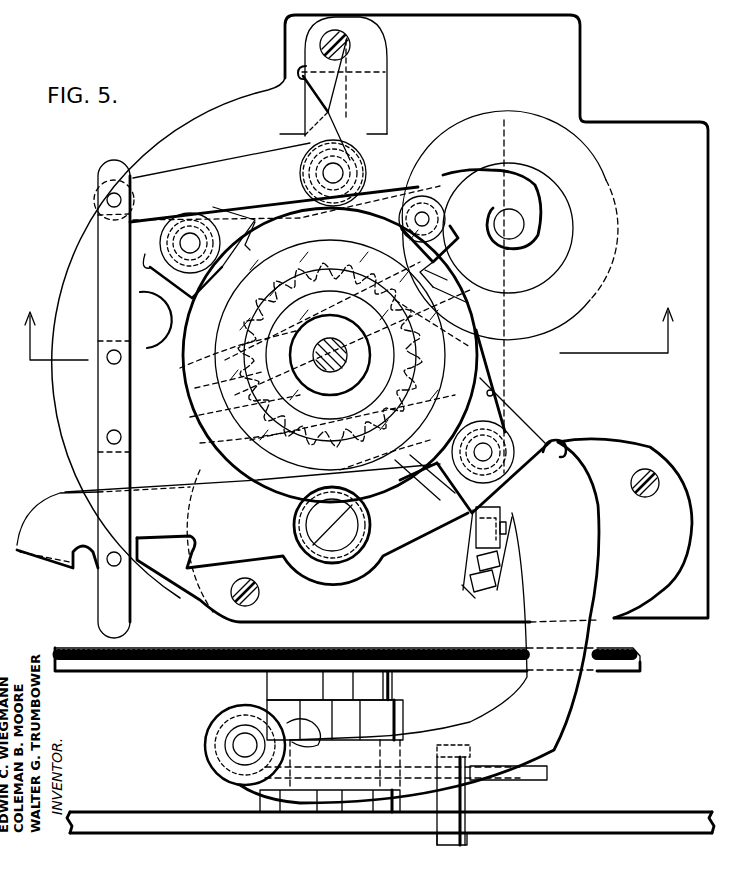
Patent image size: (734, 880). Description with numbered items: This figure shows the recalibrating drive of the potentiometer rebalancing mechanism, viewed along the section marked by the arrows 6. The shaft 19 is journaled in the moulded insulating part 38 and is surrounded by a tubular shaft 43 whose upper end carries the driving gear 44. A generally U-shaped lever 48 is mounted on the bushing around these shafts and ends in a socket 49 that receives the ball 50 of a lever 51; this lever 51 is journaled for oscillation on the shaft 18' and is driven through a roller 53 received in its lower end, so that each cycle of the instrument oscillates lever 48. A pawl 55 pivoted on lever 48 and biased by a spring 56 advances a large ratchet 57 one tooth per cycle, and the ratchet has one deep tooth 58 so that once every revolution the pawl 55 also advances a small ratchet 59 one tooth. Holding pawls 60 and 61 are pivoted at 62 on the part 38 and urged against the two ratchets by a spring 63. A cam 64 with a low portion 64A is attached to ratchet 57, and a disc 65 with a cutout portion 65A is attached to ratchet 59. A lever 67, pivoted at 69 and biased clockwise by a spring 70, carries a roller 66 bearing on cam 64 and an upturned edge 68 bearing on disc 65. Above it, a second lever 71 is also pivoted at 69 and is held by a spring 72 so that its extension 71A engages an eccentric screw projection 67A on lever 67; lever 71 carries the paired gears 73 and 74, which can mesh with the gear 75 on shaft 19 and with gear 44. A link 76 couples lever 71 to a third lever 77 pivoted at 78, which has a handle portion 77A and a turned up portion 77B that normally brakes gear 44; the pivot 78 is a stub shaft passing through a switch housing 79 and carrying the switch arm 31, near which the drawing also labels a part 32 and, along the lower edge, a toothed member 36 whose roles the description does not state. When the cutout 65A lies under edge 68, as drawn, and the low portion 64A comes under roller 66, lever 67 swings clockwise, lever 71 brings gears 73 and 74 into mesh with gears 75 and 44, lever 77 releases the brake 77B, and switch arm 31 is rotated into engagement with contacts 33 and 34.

The section line 6 is at (349, 348).
The shaft 18' is at (390, 752).
The shaft 19 is at (330, 359).
The switch arm 31 is at (484, 547).
The pin 32 is at (508, 532).
The contact 33 is at (484, 561).
The contact 34 is at (477, 581).
The rack 36 is at (90, 668).
The part 38 is at (80, 247).
The tubular shaft 43 is at (343, 339).
The driving gear 44 is at (202, 416).
The lever 48 is at (592, 558).
The socket 49 is at (222, 718).
The ball 50 is at (233, 742).
The lever 51 is at (537, 773).
The roller 53 is at (470, 785).
The pawl 55 is at (489, 387).
The spring 56 is at (540, 440).
The large ratchet 57 is at (206, 443).
The deep tooth 58 is at (462, 300).
The small ratchet 59 is at (194, 467).
The holding pawl 60 is at (260, 225).
The holding pawl 61 is at (165, 330).
The pivot 62 is at (190, 243).
The spring 63 is at (147, 266).
The cam 64 is at (442, 272).
The low portion 64A is at (470, 347).
The disc 65 is at (196, 392).
The cutout portion 65A is at (482, 258).
The roller 66 is at (446, 222).
The lever 67 is at (308, 119).
The projection 67A is at (318, 45).
The upturned edge 68 is at (454, 236).
The pivot 69 is at (372, 132).
The spring 70 is at (430, 150).
The second lever 71 is at (196, 172).
The extension 71A is at (374, 72).
The spring 72 is at (298, 74).
The gear 73 is at (604, 190).
The gear 74 is at (572, 240).
The gear 75 is at (193, 368).
The link 76 is at (108, 313).
The third lever 77 is at (232, 553).
The turned down portion 77A is at (52, 553).
The turned up portion 77B is at (449, 497).
The pivot 78 is at (337, 540).
The switch housing 79 is at (624, 452).